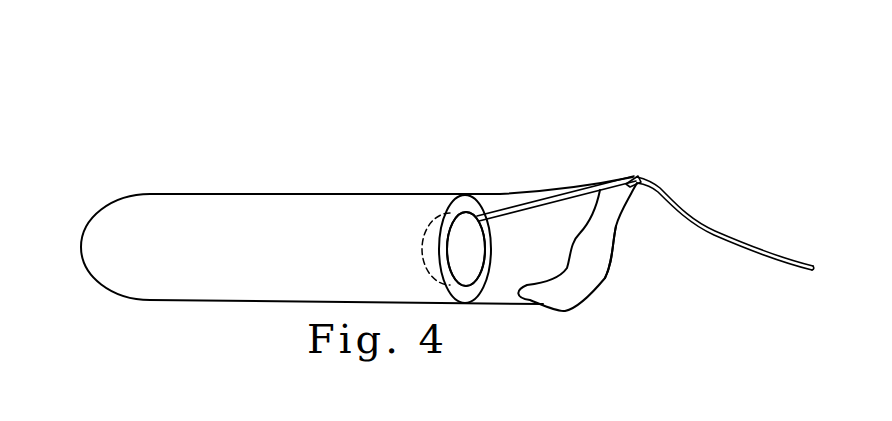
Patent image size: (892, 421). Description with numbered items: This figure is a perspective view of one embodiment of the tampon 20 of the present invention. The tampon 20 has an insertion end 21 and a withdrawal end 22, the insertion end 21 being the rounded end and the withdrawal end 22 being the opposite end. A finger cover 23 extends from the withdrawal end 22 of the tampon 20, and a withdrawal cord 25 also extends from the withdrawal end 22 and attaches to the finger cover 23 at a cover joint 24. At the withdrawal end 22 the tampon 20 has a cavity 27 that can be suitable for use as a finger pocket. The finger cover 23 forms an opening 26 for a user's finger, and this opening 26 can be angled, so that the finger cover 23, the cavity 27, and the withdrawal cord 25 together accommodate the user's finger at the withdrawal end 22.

The tampon 20 is at (226, 100).
The insertion end 21 is at (98, 178).
The withdrawal end 22 is at (427, 176).
The finger cover 23 is at (535, 245).
The cover joint 24 is at (633, 156).
The withdrawal cord 25 is at (745, 240).
The opening 26 is at (664, 297).
The cavity 27 is at (462, 247).